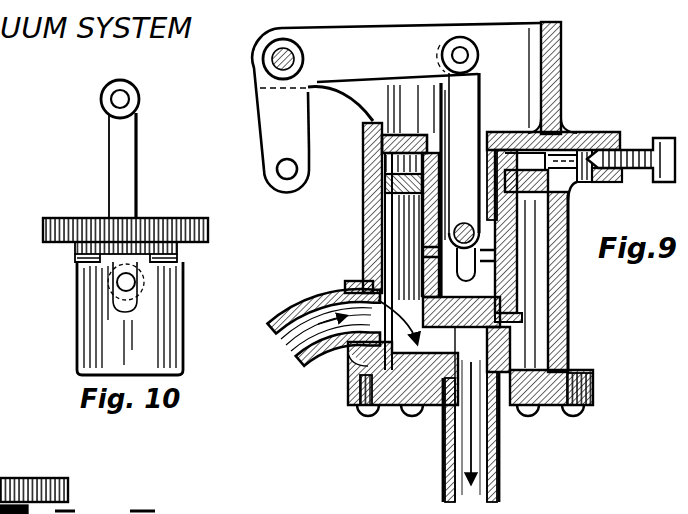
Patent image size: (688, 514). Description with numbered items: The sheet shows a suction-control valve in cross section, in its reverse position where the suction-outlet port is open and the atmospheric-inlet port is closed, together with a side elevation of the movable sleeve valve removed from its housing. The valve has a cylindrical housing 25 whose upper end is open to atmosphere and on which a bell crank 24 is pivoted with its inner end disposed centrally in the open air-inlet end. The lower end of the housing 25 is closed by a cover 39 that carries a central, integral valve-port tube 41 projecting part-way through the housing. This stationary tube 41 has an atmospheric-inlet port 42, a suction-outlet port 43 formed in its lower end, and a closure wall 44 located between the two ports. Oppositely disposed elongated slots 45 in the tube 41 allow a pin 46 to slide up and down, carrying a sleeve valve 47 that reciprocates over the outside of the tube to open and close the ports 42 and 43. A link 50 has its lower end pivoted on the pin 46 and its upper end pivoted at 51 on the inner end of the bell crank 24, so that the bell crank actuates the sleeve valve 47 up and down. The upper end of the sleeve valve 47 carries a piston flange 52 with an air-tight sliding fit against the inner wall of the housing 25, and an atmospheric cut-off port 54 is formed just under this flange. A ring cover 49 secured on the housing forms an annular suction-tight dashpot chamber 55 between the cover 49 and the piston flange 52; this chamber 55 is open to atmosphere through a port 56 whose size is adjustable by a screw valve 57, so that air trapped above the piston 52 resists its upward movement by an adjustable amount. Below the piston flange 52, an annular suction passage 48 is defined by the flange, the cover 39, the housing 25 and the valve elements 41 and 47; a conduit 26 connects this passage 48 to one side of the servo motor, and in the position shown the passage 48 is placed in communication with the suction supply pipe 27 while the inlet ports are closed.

In FIG. 9, the bell crank 24 is at (333, 42).
In FIG. 9, the valve housing 25 is at (561, 42).
In FIG. 9, the conduit 26 is at (283, 340).
In FIG. 9, the suction supply pipe 27 is at (501, 470).
In FIG. 9, the cover 39 is at (348, 400).
In FIG. 9, the valve-port tube 41 is at (440, 130).
In FIG. 9, the atmospheric-inlet port 42 is at (395, 258).
In FIG. 9, the suction-outlet port 43 is at (512, 352).
In FIG. 9, the closure wall 44 is at (500, 300).
In FIG. 9, the elongated slot 45 is at (480, 272).
In FIG. 10, the pin 46 is at (118, 284).
In FIG. 10, the sleeve valve 47 is at (110, 326).
In FIG. 9, the sleeve valve 47 is at (418, 238).
In FIG. 9, the suction passage 48 is at (540, 305).
In FIG. 9, the ring cover 49 is at (380, 150).
In FIG. 10, the link 50 is at (125, 162).
In FIG. 9, the link 50 is at (468, 98).
In FIG. 10, the pivot 51 is at (122, 100).
In FIG. 10, the piston flange 52 is at (184, 218).
In FIG. 9, the piston flange 52 is at (383, 186).
In FIG. 10, the atmospheric cut-off port 54 is at (88, 262).
In FIG. 9, the atmospheric cut-off port 54 is at (410, 222).
In FIG. 9, the dashpot chamber 55 is at (542, 124).
In FIG. 9, the port 56 is at (586, 183).
In FIG. 9, the screw valve 57 is at (647, 150).